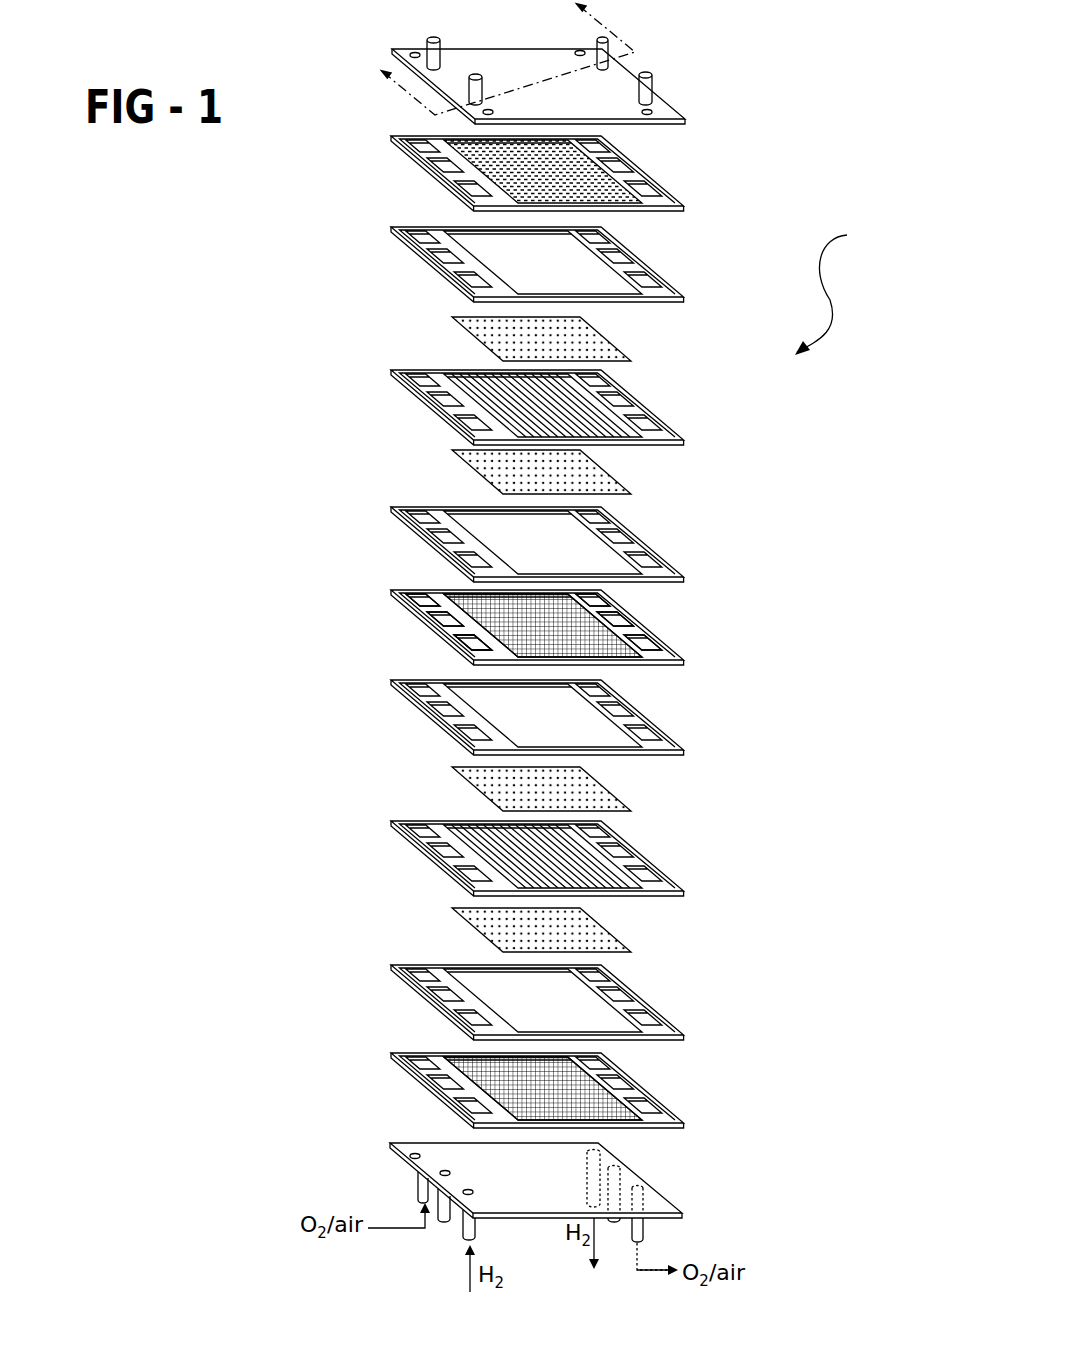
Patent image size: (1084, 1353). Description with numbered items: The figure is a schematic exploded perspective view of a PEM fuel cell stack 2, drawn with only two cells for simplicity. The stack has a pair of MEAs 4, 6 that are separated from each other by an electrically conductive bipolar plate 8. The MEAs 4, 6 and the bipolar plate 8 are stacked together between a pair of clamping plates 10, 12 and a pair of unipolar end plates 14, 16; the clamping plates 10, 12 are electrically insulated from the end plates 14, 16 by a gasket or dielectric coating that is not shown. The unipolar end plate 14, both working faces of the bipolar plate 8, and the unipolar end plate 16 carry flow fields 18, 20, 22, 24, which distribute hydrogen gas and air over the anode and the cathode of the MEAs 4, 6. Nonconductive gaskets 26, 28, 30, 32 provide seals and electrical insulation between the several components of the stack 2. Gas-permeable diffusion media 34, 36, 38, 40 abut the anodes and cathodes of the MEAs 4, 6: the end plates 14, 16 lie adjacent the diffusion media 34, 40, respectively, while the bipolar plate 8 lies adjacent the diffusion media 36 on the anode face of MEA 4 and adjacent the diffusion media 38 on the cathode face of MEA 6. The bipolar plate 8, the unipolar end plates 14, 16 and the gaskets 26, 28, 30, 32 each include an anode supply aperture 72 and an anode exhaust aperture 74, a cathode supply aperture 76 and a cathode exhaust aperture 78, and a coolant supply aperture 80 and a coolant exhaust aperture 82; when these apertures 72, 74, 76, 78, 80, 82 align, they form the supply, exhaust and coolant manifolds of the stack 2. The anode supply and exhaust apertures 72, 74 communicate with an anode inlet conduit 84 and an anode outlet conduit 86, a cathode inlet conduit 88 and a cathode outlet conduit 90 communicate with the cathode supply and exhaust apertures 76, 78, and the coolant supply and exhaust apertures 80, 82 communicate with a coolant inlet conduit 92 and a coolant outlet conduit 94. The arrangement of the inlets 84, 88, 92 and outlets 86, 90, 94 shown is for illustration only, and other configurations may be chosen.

The fuel cell stack 2 is at (623, 177).
The MEA 4 is at (417, 408).
The MEA 6 is at (645, 850).
The bipolar plate 8 is at (402, 612).
The clamping plate 10 is at (386, 63).
The clamping plate 12 is at (652, 1187).
The unipolar end plate 14 is at (420, 172).
The unipolar end plate 16 is at (626, 1072).
The flow field 18 is at (433, 180).
The flow field 20 is at (585, 615).
The flow field 22 is at (460, 653).
The flow field 24 is at (620, 1105).
The nonconductive gasket 26 is at (440, 240).
The nonconductive gasket 28 is at (433, 545).
The nonconductive gasket 30 is at (625, 723).
The nonconductive gasket 32 is at (618, 998).
The gas-permeable diffusion media 34 is at (487, 338).
The gas-permeable diffusion media 36 is at (487, 473).
The gas-permeable diffusion media 38 is at (600, 780).
The gas-permeable diffusion media 40 is at (605, 925).
The anode supply aperture 72 is at (467, 658).
The anode exhaust aperture 74 is at (600, 602).
The cathode supply aperture 76 is at (418, 600).
The cathode exhaust aperture 78 is at (662, 648).
The coolant supply aperture 80 is at (442, 623).
The coolant exhaust aperture 82 is at (645, 622).
The anode inlet conduit 84 is at (463, 1232).
The anode outlet conduit 86 is at (600, 1162).
The cathode inlet conduit 88 is at (418, 1190).
The cathode outlet conduit 90 is at (644, 1222).
The coolant inlet conduit 92 is at (446, 1222).
The coolant outlet conduit 94 is at (614, 1224).